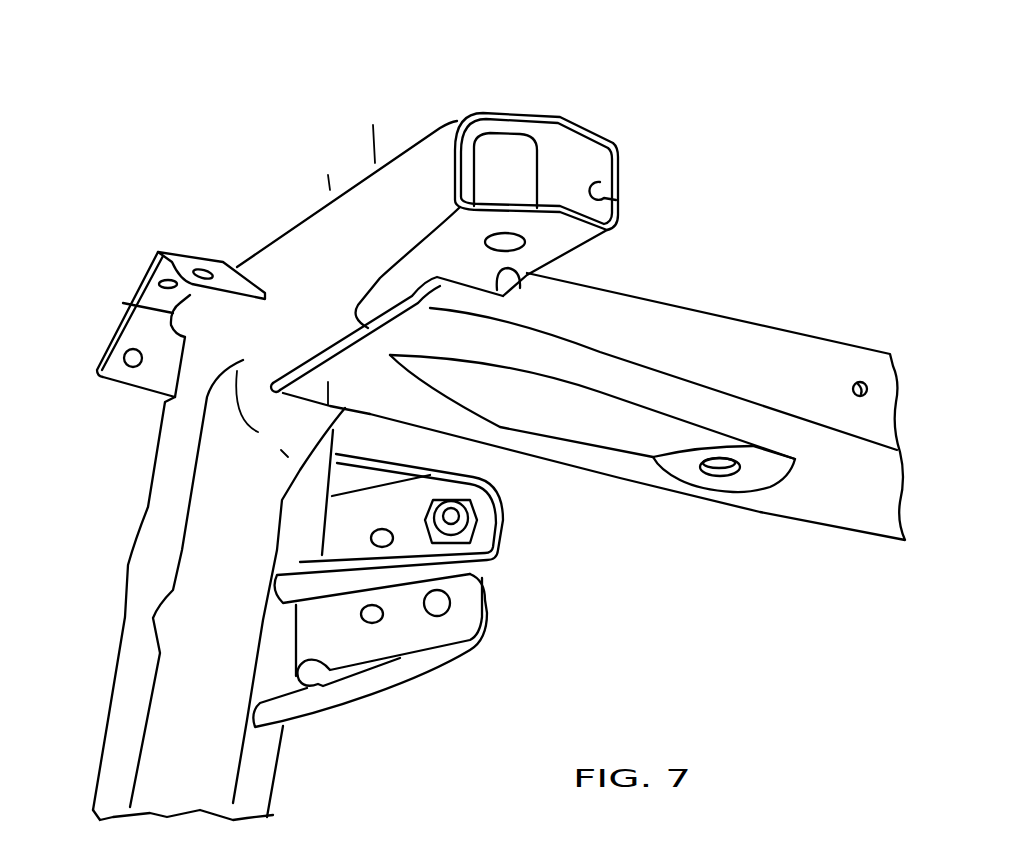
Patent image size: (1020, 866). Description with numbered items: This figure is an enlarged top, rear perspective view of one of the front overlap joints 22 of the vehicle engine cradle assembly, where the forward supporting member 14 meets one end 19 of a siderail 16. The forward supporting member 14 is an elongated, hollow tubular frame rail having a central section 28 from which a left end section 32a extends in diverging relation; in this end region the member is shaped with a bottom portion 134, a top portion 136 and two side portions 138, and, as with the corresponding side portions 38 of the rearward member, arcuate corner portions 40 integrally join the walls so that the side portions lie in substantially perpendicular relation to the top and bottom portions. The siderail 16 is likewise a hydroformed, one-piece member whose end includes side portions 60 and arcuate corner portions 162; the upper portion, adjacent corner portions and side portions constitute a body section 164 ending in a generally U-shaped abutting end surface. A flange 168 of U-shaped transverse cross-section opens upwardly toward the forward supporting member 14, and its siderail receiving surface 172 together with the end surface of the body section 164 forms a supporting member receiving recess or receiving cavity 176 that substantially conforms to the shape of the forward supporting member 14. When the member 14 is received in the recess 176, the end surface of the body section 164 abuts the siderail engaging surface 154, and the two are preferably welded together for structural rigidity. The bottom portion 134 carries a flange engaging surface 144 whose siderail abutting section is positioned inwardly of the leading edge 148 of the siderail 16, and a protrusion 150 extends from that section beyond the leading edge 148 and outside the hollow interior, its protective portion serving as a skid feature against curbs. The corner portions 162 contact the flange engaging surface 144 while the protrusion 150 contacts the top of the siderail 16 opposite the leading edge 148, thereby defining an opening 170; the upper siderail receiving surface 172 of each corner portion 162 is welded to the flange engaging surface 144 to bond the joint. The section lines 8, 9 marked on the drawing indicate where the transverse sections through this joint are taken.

The forward supporting member 14 is at (186, 590).
The siderail 16 is at (846, 533).
The end of siderail 19 is at (637, 417).
The front overlapping joint 22 is at (228, 240).
The central section 28 is at (123, 620).
The left end section 32a is at (590, 120).
The side portion 38 is at (622, 198).
The arcuate corner portion 40 is at (545, 181).
The side portion 60 is at (813, 352).
The bottom portion 134 is at (560, 243).
The top portion 136 is at (540, 113).
The side portion 138 is at (428, 165).
The flange engaging surface 144 is at (284, 372).
The leading edge 148 is at (413, 328).
The protrusion 150 is at (437, 380).
The siderail engaging surface 154 is at (620, 177).
The corner portion 162 is at (613, 355).
The body section 164 is at (725, 514).
The flange 168 is at (381, 417).
The opening 170 is at (400, 306).
The siderail receiving surface 172 is at (450, 292).
The receiving cavity 176 is at (505, 284).
The section line 8- 8 is at (328, 175).
The section line 9- 9 is at (373, 125).